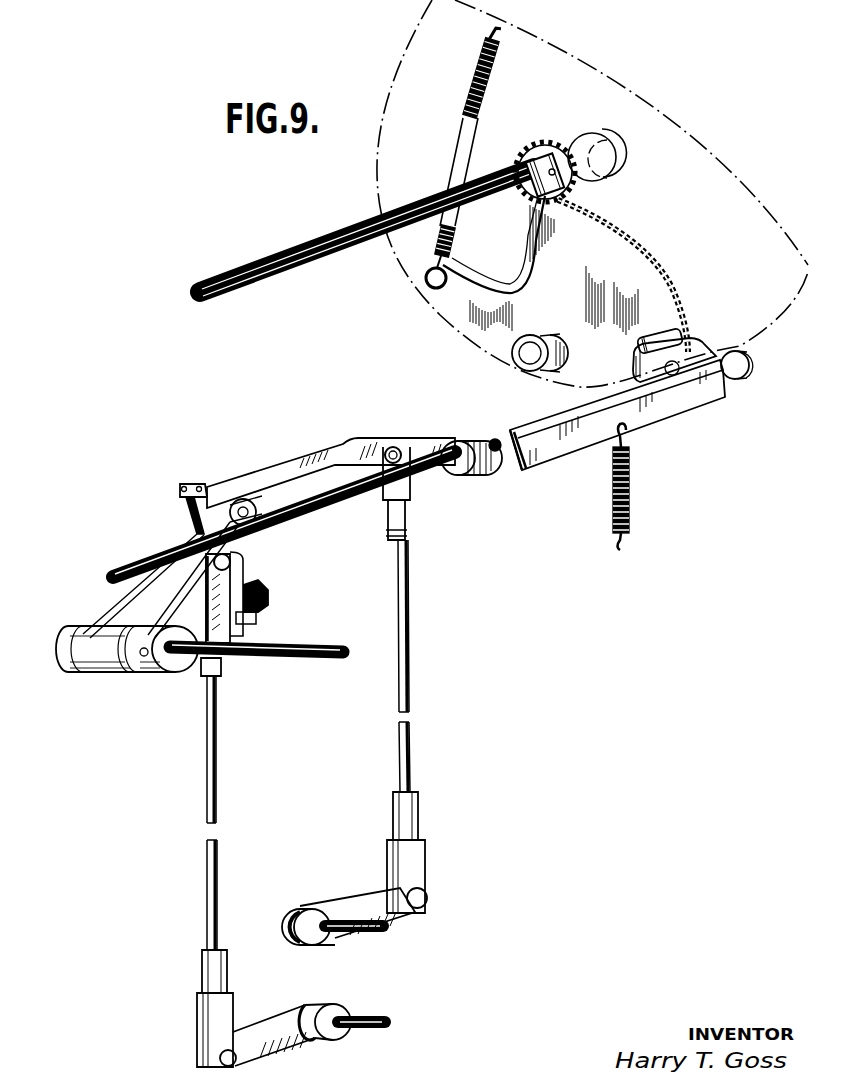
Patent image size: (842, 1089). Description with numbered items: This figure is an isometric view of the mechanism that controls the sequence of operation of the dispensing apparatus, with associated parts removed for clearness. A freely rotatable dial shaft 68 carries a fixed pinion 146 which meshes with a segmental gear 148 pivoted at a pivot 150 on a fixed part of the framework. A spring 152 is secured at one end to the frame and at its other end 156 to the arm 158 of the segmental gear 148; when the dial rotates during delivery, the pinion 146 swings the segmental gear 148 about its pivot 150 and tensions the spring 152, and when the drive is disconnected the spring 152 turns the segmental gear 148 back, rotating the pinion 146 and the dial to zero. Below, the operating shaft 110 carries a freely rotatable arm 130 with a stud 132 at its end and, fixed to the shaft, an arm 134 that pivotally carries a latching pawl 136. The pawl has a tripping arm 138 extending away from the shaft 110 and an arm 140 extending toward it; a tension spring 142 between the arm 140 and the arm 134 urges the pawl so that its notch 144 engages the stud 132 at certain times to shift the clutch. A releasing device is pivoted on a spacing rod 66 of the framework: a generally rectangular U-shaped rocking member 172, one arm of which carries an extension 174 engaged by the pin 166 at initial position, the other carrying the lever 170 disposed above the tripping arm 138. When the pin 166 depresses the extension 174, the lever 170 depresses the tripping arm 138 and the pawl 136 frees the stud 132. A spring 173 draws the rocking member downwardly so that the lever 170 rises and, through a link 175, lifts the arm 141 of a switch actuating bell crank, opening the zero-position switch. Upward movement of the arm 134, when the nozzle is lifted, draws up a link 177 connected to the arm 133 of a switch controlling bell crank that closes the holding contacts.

The spacing rod 66 is at (448, 470).
The dial shaft 68 is at (270, 260).
The operating shaft 110 is at (296, 658).
The arm 130 is at (135, 620).
The stud 132 is at (270, 598).
The arm of switch controlling bell crank 133 is at (275, 1047).
The arm 134 is at (180, 600).
The latching pawl 136 is at (244, 564).
The tripping arm 138 is at (291, 486).
The arm 140 is at (208, 492).
The arm of switch actuating bell crank 141 is at (355, 899).
The tension spring 142 is at (186, 503).
The notch 144 is at (258, 617).
The pinion 146 is at (547, 143).
The segmental gear 148 is at (661, 270).
The pivot 150 is at (522, 362).
The spring 152 is at (490, 90).
The spring end 156 is at (423, 288).
The arm of segmental gear 158 is at (470, 303).
The pin 166 is at (690, 322).
The lever 170 is at (380, 443).
The rocking member 172 is at (530, 466).
The spring 173 is at (632, 487).
The extension 174 is at (694, 340).
The link 175 is at (411, 645).
The link 177 is at (218, 778).